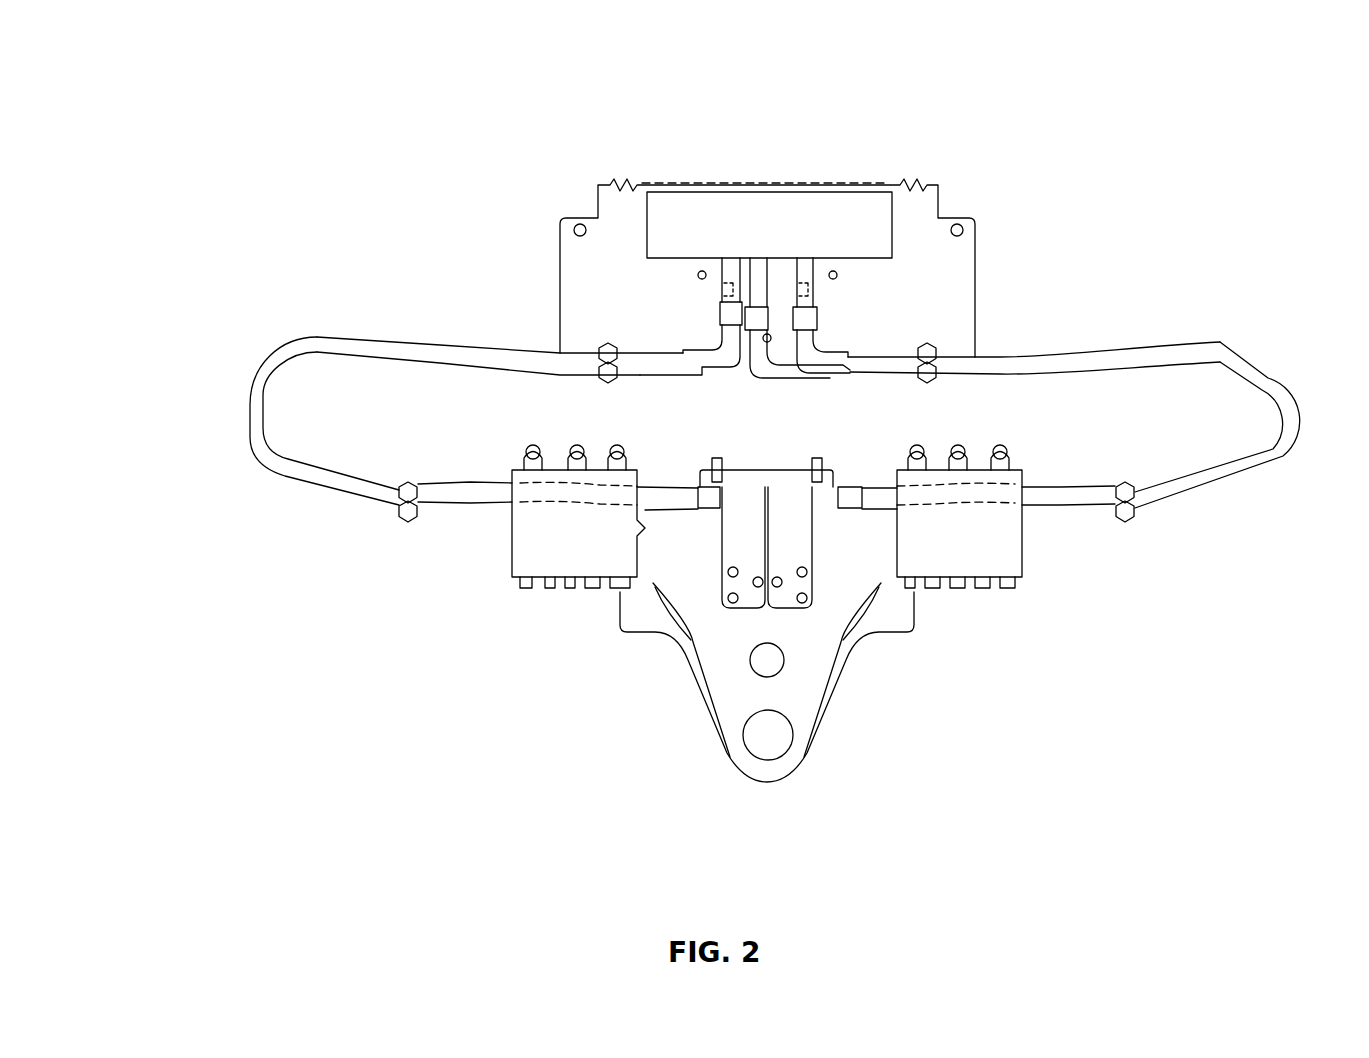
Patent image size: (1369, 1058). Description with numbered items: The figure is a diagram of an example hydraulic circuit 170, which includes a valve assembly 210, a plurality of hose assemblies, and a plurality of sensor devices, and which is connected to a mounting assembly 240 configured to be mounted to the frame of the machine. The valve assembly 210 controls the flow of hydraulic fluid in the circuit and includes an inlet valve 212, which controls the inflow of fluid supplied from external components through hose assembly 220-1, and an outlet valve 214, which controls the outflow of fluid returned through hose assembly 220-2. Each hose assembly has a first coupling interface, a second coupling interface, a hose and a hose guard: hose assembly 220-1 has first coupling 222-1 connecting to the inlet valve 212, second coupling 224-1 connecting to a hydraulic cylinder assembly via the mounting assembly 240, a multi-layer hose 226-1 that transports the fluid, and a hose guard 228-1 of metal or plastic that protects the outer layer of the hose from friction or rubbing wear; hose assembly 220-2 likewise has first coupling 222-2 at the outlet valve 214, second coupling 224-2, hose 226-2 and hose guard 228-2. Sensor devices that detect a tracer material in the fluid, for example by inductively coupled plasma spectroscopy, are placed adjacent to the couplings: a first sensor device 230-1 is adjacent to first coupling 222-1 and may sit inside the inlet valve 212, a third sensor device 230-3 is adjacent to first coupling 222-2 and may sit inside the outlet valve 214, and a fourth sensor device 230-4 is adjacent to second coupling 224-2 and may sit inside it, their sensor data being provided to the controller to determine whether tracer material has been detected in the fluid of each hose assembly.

The hydraulic circuit 170 is at (228, 68).
The valve assembly 210 is at (620, 136).
The inlet valve 212 is at (718, 296).
The outlet valve 214 is at (820, 290).
The hose assembly 220-1 is at (272, 328).
The hose assembly 220-2 is at (1182, 310).
The first coupling interface 222-1 is at (718, 322).
The first coupling interface 222-2 is at (820, 315).
The second coupling interface 224-1 is at (700, 485).
The second coupling interface 224-2 is at (862, 485).
The hose 226-1 is at (365, 345).
The hose 226-2 is at (1063, 360).
The hose guard 228-1 is at (403, 480).
The hose guard 228-2 is at (1125, 480).
The first sensor device 230-1 is at (722, 283).
The third sensor device 230-3 is at (800, 283).
The fourth sensor device 230-4 is at (820, 470).
The mounting assembly 240 is at (583, 703).